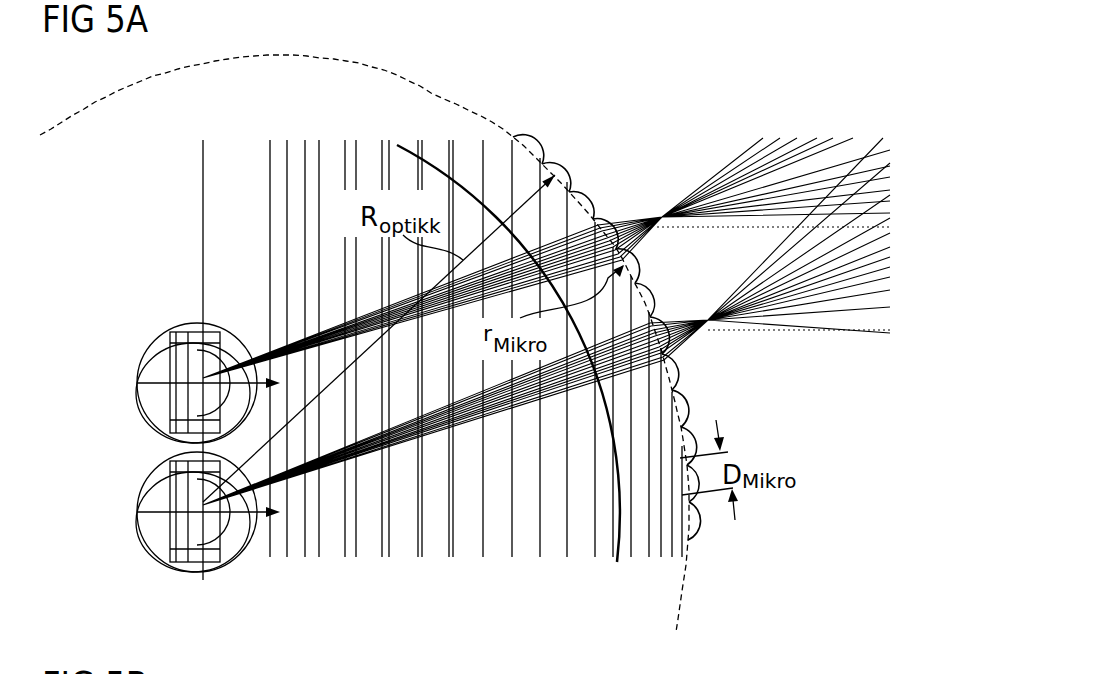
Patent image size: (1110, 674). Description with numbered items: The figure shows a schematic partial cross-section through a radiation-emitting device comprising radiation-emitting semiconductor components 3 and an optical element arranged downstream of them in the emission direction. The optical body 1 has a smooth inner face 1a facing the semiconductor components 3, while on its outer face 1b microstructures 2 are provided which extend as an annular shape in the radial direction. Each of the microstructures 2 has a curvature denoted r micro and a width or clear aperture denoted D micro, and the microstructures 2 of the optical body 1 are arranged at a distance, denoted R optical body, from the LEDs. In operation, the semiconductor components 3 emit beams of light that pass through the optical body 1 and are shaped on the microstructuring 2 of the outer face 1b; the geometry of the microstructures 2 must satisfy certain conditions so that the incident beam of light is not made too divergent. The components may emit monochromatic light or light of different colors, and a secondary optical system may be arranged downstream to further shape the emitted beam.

The optical body 1 is at (471, 134).
The inner face 1a is at (613, 543).
The outer face 1b is at (695, 543).
The microstructures 2 is at (537, 139).
The radiation-emitting semiconductor components 3 is at (142, 483).